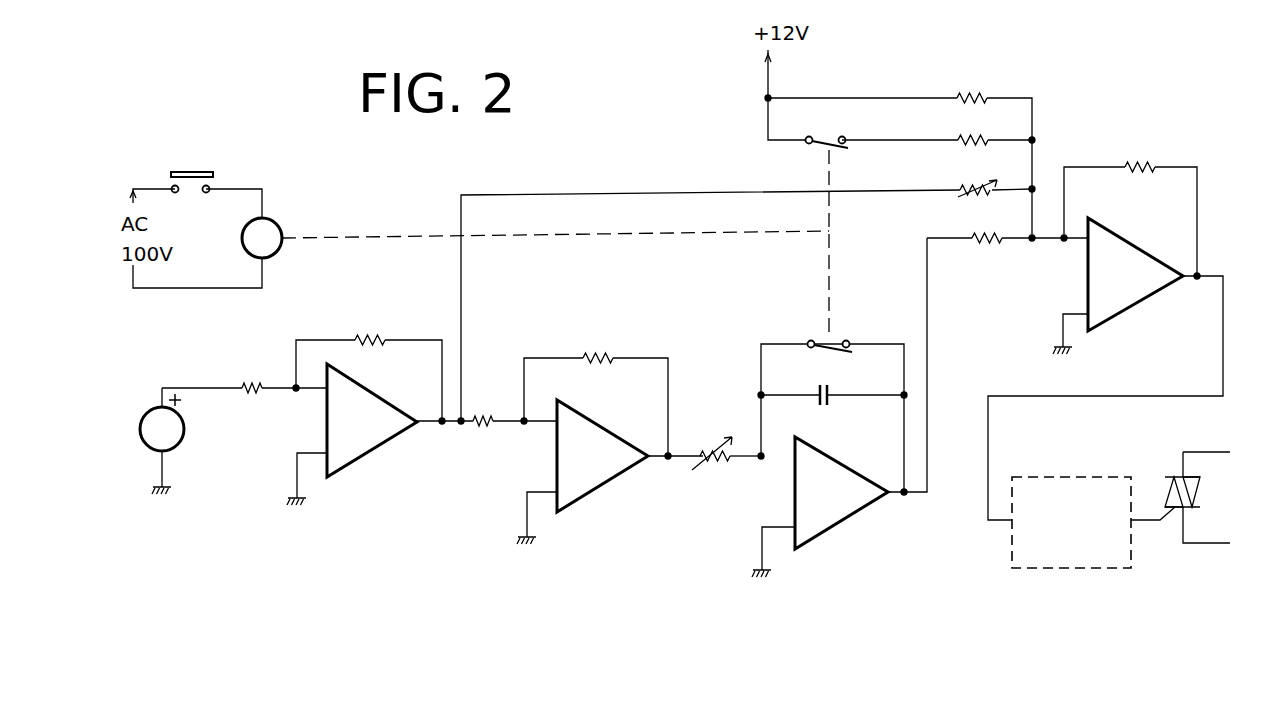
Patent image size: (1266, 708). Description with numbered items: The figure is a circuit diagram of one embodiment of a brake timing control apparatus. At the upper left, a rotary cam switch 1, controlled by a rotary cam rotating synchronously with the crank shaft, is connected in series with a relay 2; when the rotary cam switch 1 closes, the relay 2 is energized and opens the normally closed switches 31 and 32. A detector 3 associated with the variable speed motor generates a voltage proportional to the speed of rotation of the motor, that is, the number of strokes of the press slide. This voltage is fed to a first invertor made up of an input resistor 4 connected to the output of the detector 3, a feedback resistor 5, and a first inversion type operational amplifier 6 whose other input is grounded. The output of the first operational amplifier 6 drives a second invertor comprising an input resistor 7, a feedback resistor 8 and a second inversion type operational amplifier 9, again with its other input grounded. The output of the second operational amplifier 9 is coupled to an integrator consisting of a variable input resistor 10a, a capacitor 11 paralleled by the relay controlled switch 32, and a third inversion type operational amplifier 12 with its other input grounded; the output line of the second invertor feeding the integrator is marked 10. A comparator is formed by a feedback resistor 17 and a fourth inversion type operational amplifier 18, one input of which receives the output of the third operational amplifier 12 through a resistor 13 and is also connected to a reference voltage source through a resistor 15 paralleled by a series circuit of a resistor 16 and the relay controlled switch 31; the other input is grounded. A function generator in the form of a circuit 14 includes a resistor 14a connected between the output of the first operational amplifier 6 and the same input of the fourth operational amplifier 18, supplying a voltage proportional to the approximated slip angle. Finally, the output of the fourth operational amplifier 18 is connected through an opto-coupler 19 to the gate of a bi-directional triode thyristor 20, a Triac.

The rotary cam switch 1 is at (188, 183).
The relay 2 is at (278, 225).
The detector 3 is at (182, 436).
The input resistor 4 is at (252, 386).
The feedback resistor 5 is at (370, 338).
The first inversion type operational amplifier 6 is at (370, 450).
The input resistor 7 is at (483, 418).
The feedback resistor 8 is at (599, 356).
The second inversion type operational amplifier 9 is at (603, 482).
The output line 10 is at (687, 445).
The variable input resistor 10a is at (715, 468).
The capacitor 11 is at (828, 406).
The third inversion type operational amplifier 12 is at (838, 523).
The resistor 13 is at (985, 242).
The circuit 14 is at (688, 192).
The resistor 14a is at (980, 193).
The resistor 15 is at (970, 100).
The resistor 16 is at (975, 143).
The feedback resistor 17 is at (1133, 165).
The fourth inversion type operational amplifier 18 is at (1145, 300).
The opto-coupler 19 is at (1068, 568).
The bi-directional triode thyristor 20 is at (1201, 490).
The normally closed switch 31 is at (826, 137).
The normally closed switch 32 is at (828, 350).